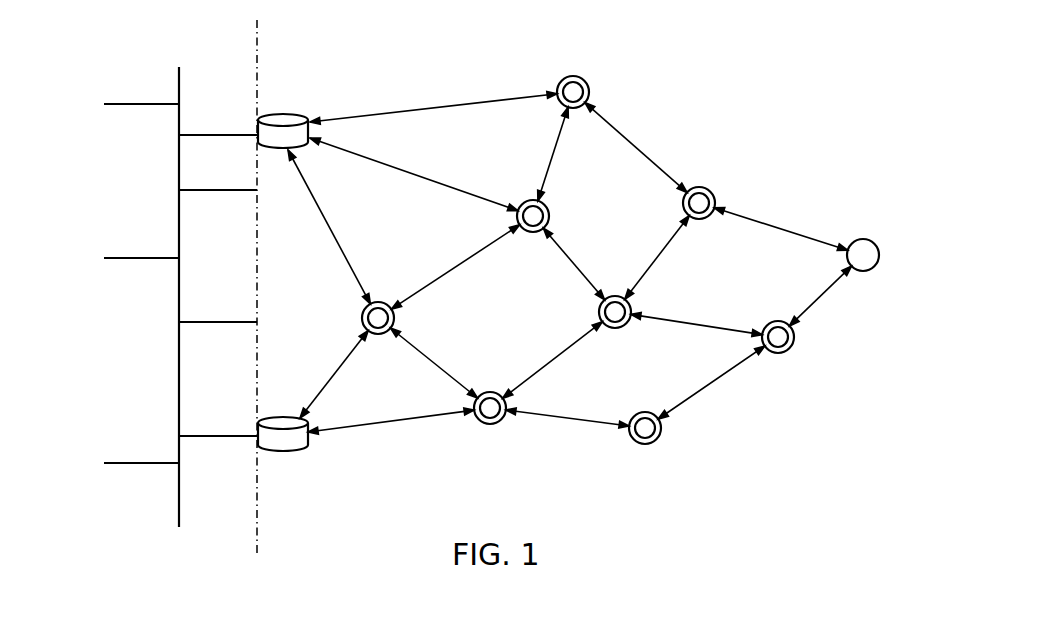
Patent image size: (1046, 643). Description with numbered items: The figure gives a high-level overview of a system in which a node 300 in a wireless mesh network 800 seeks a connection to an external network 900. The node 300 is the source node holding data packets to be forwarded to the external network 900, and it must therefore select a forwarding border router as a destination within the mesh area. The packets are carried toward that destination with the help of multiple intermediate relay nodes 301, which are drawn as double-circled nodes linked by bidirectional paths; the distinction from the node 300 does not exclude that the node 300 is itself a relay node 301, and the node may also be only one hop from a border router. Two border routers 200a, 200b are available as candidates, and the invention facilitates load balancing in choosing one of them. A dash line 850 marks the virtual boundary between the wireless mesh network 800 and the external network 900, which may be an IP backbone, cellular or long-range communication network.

The external network 900 is at (110, 92).
The border router 200a is at (280, 113).
The border router 200b is at (271, 419).
The dash line 850 is at (260, 497).
The wireless mesh network 800 is at (862, 93).
The node 300 is at (856, 234).
The relay node 301 is at (661, 441).